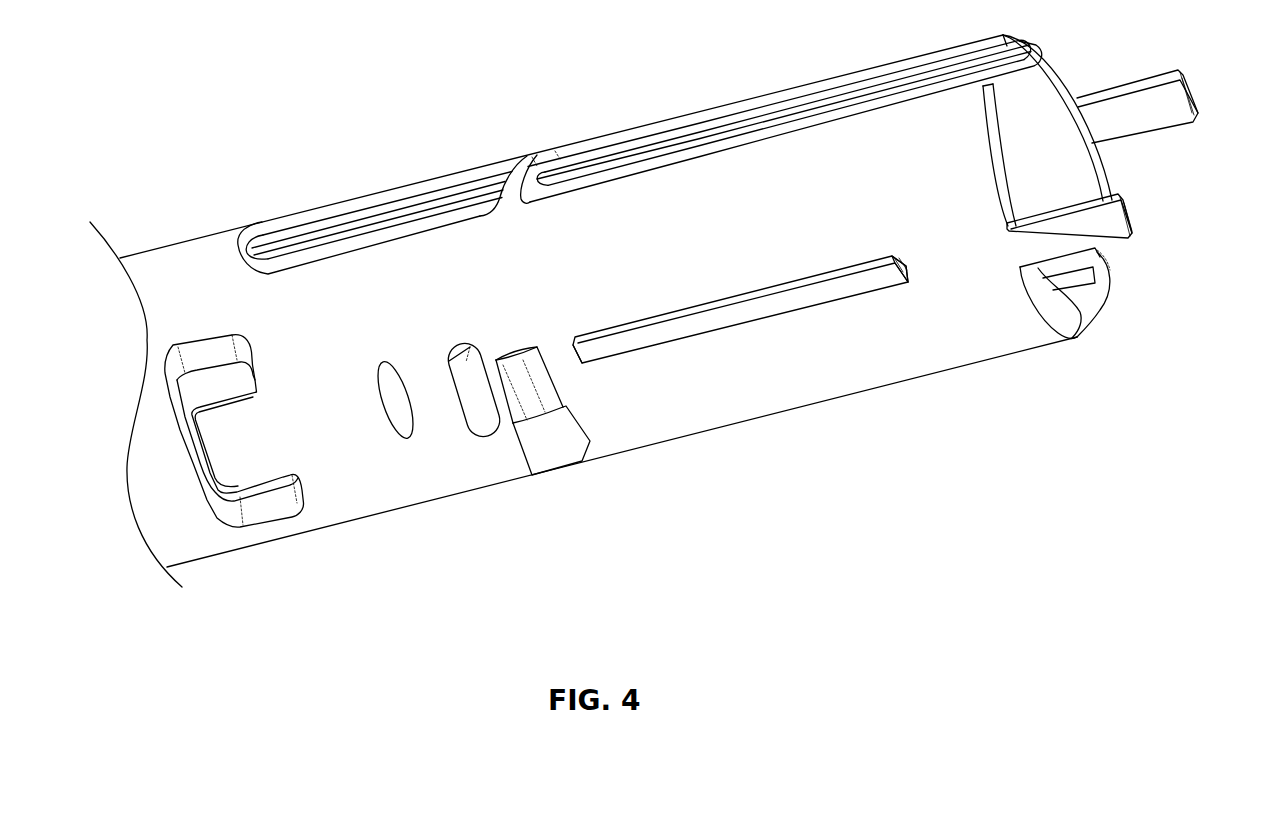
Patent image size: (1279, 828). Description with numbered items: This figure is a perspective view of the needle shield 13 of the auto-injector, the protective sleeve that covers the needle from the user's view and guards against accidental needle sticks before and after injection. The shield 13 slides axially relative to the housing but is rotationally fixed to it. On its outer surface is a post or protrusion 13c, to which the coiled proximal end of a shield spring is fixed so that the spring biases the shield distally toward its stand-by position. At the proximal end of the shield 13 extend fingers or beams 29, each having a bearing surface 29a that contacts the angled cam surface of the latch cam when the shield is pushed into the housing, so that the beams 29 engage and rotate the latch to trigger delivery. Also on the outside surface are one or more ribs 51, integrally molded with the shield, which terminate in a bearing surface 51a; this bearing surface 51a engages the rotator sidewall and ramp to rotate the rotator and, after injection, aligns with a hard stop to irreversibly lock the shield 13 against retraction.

The needle shield 13 is at (690, 238).
The post or protrusion 13c is at (528, 395).
The fingers or beams 29 is at (1068, 242).
The bearing surface 29a is at (1130, 210).
The rib 51 is at (755, 312).
The bearing surface 51a is at (908, 272).